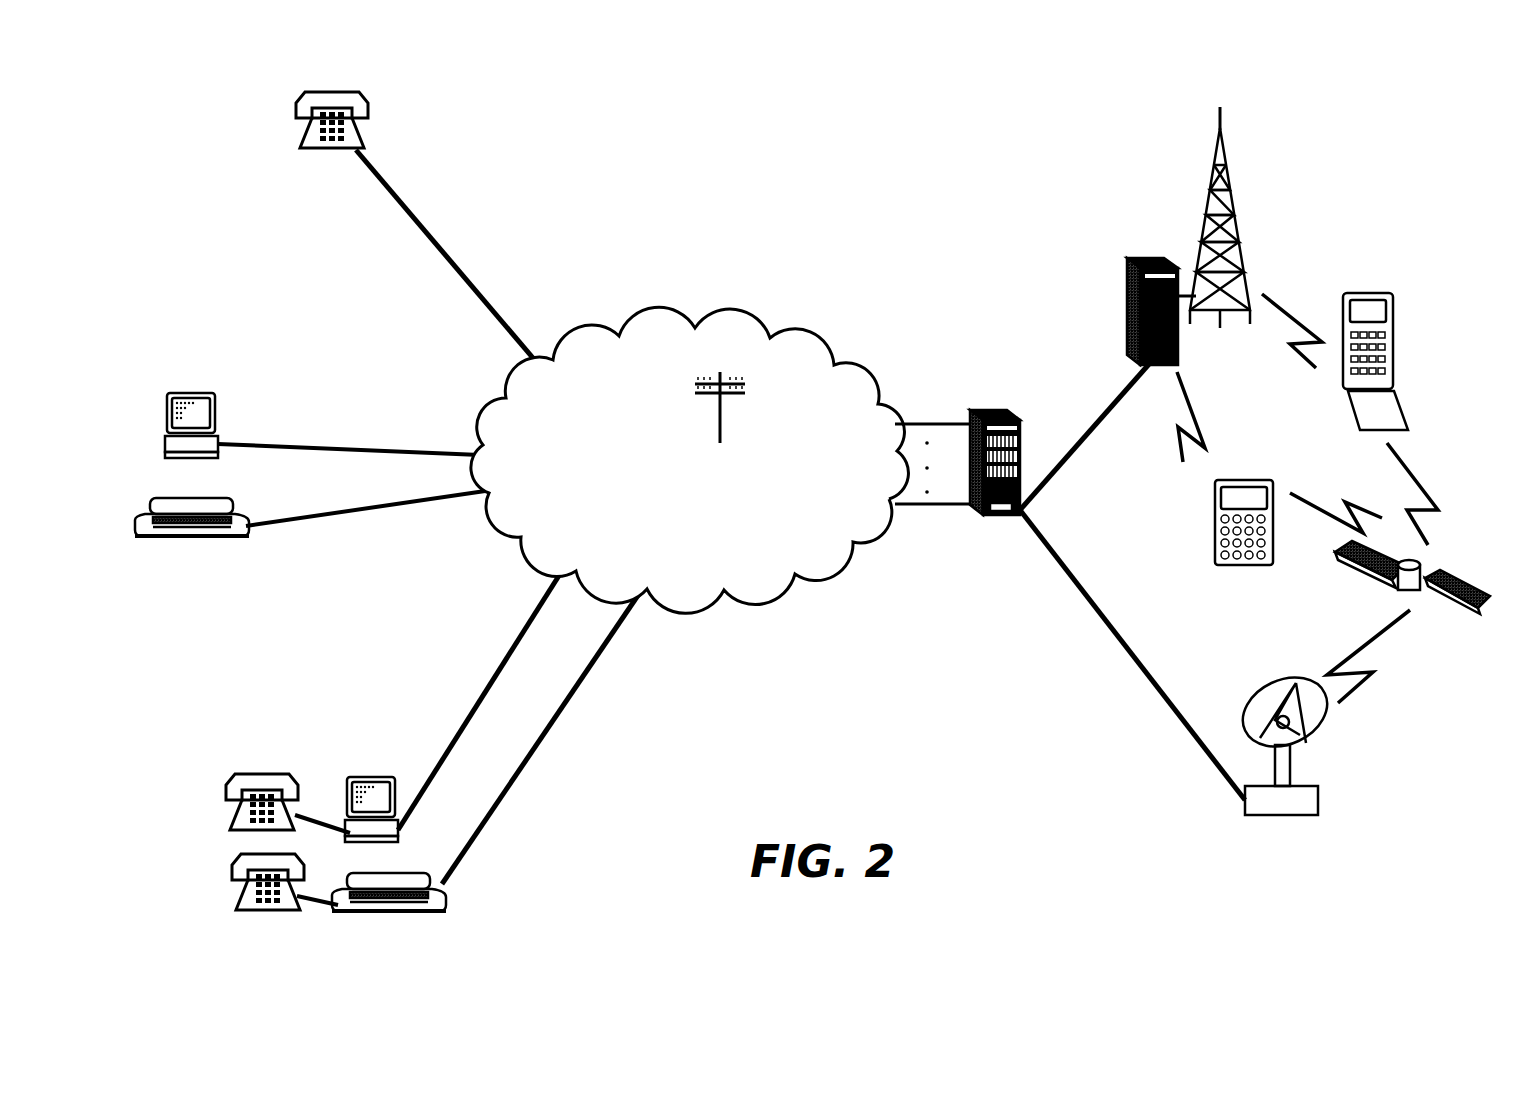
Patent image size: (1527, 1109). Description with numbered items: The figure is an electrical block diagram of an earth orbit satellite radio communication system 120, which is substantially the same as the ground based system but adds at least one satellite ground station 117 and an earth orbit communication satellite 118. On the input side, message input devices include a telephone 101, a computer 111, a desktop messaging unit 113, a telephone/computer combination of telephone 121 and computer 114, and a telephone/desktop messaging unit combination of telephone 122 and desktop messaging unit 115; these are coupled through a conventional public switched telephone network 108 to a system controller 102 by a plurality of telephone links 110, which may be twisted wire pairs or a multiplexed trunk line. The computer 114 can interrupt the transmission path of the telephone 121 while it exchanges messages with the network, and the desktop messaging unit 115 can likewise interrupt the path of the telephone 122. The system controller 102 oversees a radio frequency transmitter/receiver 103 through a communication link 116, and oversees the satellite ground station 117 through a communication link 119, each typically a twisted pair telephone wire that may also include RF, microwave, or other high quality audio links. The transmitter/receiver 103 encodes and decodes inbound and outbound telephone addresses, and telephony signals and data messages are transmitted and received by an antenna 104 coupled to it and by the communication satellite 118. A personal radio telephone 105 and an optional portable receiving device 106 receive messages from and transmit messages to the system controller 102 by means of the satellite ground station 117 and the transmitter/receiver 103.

The telephone 101 is at (368, 118).
The system controller 102 is at (990, 410).
The radio frequency transmitter/receiver 103 is at (1155, 258).
The antenna 104 is at (1245, 262).
The personal radio telephone 105 is at (1370, 293).
The portable receiving device 106 is at (1205, 527).
The public switched telephone network 108 is at (730, 325).
The telephone links 110 is at (900, 512).
The computer 111 is at (195, 390).
The desktop messaging unit 113 is at (195, 538).
The computer 114 is at (380, 777).
The desktop messaging unit 115 is at (395, 915).
The communication link 116 is at (1120, 362).
The satellite ground station 117 is at (1270, 816).
The satellite 118 is at (1430, 615).
The communication link 119 is at (1147, 665).
The earth orbit satellite radio communication system 120 is at (778, 756).
The telephone 121 is at (262, 774).
The telephone 122 is at (258, 910).